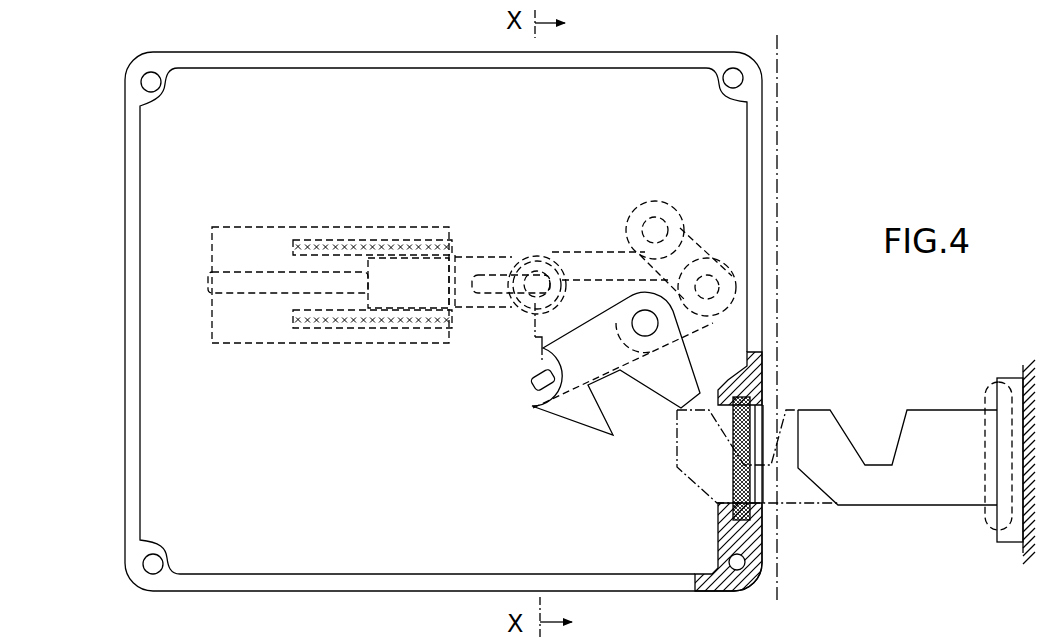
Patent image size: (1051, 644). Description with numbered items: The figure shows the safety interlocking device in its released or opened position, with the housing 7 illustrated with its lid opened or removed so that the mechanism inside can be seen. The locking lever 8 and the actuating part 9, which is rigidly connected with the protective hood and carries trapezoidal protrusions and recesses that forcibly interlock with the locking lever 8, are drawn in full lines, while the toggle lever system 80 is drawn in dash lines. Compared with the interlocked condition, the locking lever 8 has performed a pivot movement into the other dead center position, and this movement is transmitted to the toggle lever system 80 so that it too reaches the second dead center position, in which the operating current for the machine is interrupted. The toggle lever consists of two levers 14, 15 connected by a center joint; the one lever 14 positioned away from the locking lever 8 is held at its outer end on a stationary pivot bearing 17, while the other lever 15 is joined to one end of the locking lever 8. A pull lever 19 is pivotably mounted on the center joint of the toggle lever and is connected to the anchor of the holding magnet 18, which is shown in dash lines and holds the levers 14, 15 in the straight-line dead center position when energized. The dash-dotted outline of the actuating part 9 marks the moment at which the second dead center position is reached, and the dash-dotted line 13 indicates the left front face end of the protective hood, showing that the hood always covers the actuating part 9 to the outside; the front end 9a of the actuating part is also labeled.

The housing 7 is at (392, 596).
The locking lever 8 is at (593, 420).
The actuating part 9 is at (963, 483).
The rod front end 9a is at (692, 462).
The dash-dotted line 13 is at (778, 543).
The lever 14 is at (692, 238).
The lever 15 is at (690, 320).
The stationary pivot bearing 17 is at (665, 232).
The holding magnet 18 is at (370, 240).
The pull lever 19 is at (593, 253).
The toggle lever system 80 is at (722, 313).